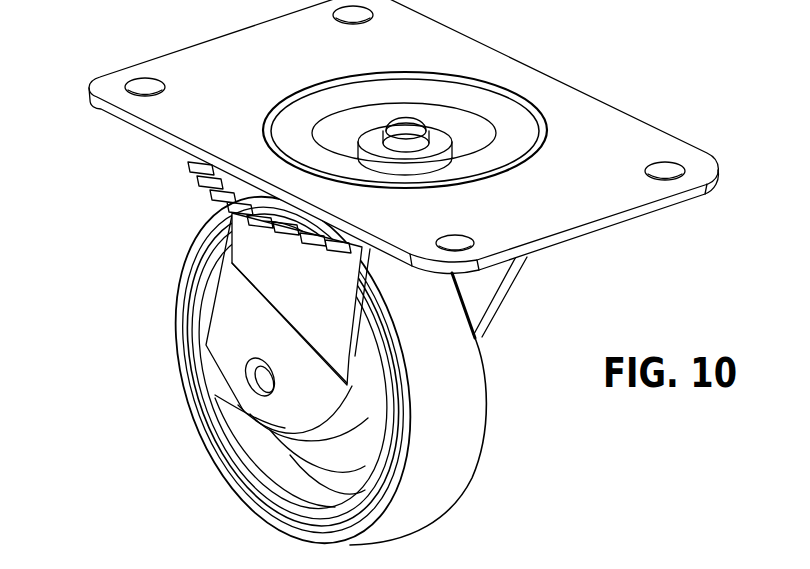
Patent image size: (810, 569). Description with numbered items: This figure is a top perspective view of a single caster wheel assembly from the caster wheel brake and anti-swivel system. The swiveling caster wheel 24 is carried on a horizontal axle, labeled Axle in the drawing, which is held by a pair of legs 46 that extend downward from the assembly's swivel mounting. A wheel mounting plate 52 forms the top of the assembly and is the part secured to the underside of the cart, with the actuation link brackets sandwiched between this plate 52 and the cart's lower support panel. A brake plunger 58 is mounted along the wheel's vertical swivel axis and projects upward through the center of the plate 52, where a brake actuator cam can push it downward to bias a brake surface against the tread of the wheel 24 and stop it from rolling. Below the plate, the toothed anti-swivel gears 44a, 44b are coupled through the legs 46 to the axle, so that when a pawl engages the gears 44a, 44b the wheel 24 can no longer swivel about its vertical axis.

The swiveling caster wheel 24 is at (235, 482).
The leg 46 is at (331, 298).
The wheel mounting plate 52 is at (678, 150).
The brake plunger 58 is at (412, 122).
The anti-swivel gear 44a is at (262, 173).
The anti-swivel gear 44b is at (243, 195).
The axle Axle is at (232, 367).